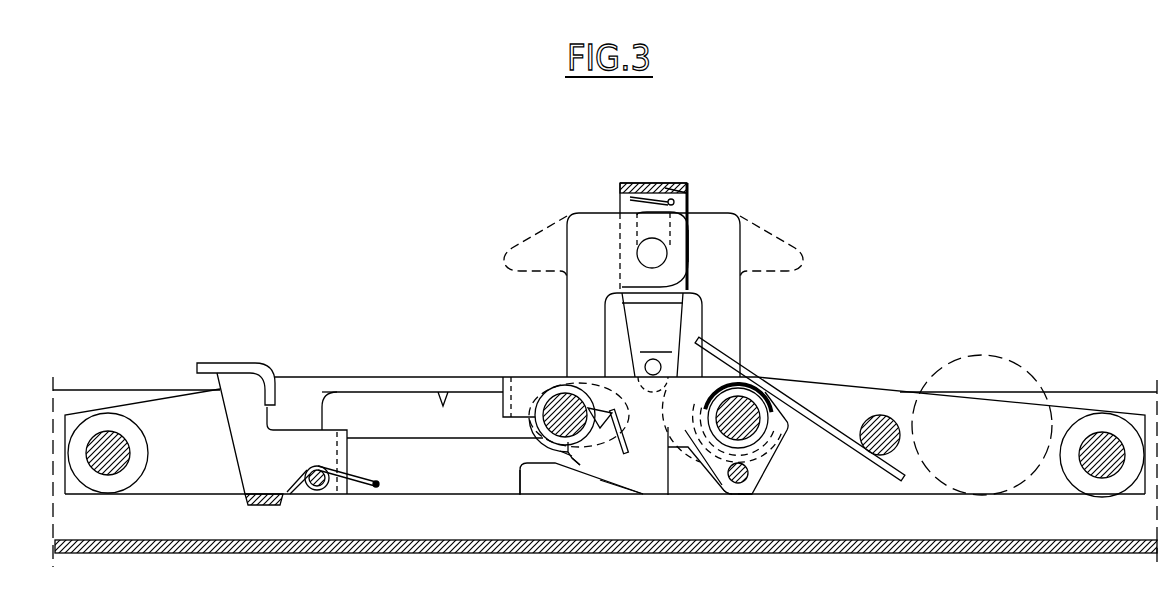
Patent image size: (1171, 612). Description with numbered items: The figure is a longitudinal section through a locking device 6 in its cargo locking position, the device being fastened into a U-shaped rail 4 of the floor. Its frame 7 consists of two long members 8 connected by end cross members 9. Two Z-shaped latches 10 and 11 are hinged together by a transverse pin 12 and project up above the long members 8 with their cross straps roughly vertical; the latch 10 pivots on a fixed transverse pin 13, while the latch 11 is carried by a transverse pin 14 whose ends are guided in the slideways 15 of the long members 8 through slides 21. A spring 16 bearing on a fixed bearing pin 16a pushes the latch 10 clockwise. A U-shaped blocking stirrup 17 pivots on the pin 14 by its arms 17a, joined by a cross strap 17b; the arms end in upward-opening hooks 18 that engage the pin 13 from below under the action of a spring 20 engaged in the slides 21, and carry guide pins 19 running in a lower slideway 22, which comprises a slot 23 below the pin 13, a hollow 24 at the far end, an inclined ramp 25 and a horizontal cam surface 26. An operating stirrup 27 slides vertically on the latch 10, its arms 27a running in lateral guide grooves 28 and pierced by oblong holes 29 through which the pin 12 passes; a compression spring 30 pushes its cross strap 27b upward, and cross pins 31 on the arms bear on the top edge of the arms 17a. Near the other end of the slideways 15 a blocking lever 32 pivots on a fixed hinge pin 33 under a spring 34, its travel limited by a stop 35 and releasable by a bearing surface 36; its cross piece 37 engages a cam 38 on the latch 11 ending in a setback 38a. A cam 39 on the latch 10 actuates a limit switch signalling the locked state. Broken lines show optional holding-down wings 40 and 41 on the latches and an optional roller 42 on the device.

The rail 4 is at (217, 547).
The locking device 6 is at (394, 342).
The frame 7 is at (423, 514).
The long member 8 is at (185, 443).
The end cross member 9 is at (108, 453).
The latch 10 is at (761, 286).
The latch 11 is at (551, 293).
The transverse pin 12 is at (652, 252).
The transverse pin 13 is at (725, 420).
The transverse pin 14 is at (567, 417).
The slideway 15 is at (440, 398).
The spring 16 is at (823, 427).
The bearing pin 16a is at (885, 420).
The blocking stirrup 17 is at (691, 474).
The arm 17a is at (668, 495).
The cross strap 17b is at (510, 382).
The hook 18 is at (747, 417).
The guide pin 19 is at (748, 491).
The spring 20 is at (625, 453).
The slide 21 is at (610, 392).
The lower slideway 22 is at (554, 486).
The slot 23 is at (742, 481).
The hollow 24 is at (533, 465).
The inclined ramp 25 is at (622, 487).
The horizontal cam surface 26 is at (703, 495).
The operating stirrup 27 is at (617, 169).
The arm 27a is at (662, 333).
The cross strap 27b is at (657, 183).
The lateral guide groove 28 is at (686, 270).
The oblong hole 29 is at (690, 217).
The compression spring 30 is at (675, 188).
The cross pin 31 is at (649, 365).
The blocking lever 32 is at (294, 404).
The hinge pin 33 is at (318, 495).
The spring 34 is at (365, 483).
The stop 35 is at (270, 505).
The bearing surface 36 is at (233, 363).
The cross piece 37 is at (340, 455).
The cam 38 is at (570, 455).
The setback 38a is at (572, 458).
The cam 39 is at (675, 406).
The holding-down wing 40 is at (787, 247).
The holding-down wing 41 is at (522, 242).
The roller 42 is at (1025, 368).